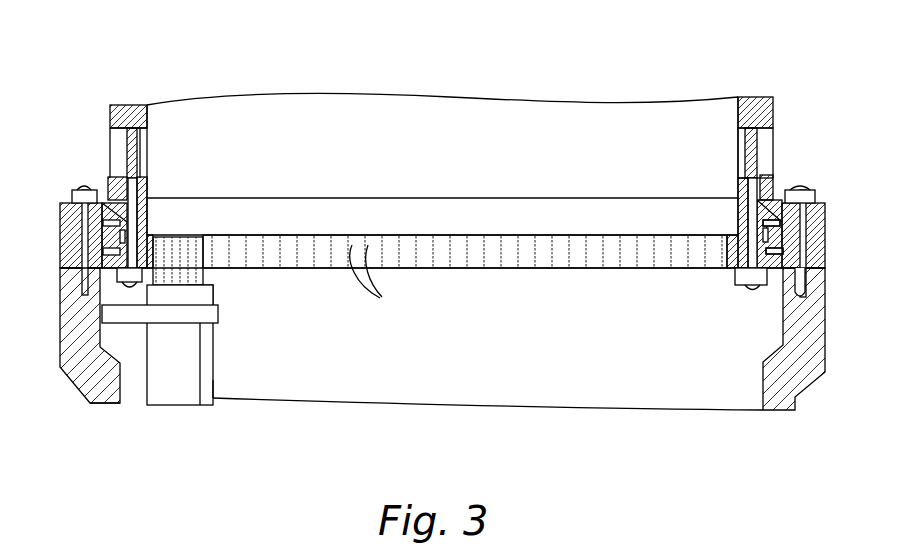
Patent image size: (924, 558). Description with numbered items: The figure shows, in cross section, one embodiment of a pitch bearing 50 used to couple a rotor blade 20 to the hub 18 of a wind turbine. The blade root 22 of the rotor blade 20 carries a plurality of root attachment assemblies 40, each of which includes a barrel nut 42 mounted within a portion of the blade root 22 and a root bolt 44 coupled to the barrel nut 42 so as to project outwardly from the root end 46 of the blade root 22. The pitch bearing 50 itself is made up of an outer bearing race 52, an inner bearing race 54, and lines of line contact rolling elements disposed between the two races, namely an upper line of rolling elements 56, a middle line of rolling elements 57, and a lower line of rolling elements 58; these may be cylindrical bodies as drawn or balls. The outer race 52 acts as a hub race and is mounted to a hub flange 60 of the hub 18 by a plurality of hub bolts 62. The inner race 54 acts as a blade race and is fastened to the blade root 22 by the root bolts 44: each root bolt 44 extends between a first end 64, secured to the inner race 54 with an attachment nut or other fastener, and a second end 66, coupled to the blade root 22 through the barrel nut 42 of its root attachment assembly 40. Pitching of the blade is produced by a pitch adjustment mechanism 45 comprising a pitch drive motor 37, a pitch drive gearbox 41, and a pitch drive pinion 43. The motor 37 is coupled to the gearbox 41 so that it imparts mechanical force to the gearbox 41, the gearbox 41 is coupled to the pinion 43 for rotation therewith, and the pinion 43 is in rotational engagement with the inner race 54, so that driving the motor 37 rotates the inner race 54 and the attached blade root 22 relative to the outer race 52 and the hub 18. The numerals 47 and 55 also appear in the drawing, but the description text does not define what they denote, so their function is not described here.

The hub 18 is at (72, 384).
The rotor blade 20 is at (578, 101).
The blade root 22 is at (765, 112).
The pitch drive motor 37 is at (180, 390).
The root attachment assembly 40 is at (840, 98).
The pitch drive gearbox 41 is at (218, 307).
The barrel nut 42 is at (110, 139).
The pitch drive pinion 43 is at (215, 279).
The root bolt 44 is at (110, 191).
The pitch adjustment mechanism 45 is at (216, 378).
The root end 46 is at (342, 198).
The connector block 47 is at (205, 252).
The pitch bearing 50 is at (628, 270).
The outer bearing race 52 is at (824, 214).
The inner bearing race 54 is at (712, 270).
The filter elements 55 is at (377, 280).
The upper line of rolling elements 56 is at (782, 223).
The middle line of rolling elements 57 is at (742, 228).
The lower line of rolling elements 58 is at (785, 251).
The hub flange 60 is at (60, 318).
The hub bolt 62 is at (72, 210).
The first end 64 is at (141, 290).
The second end 66 is at (148, 152).